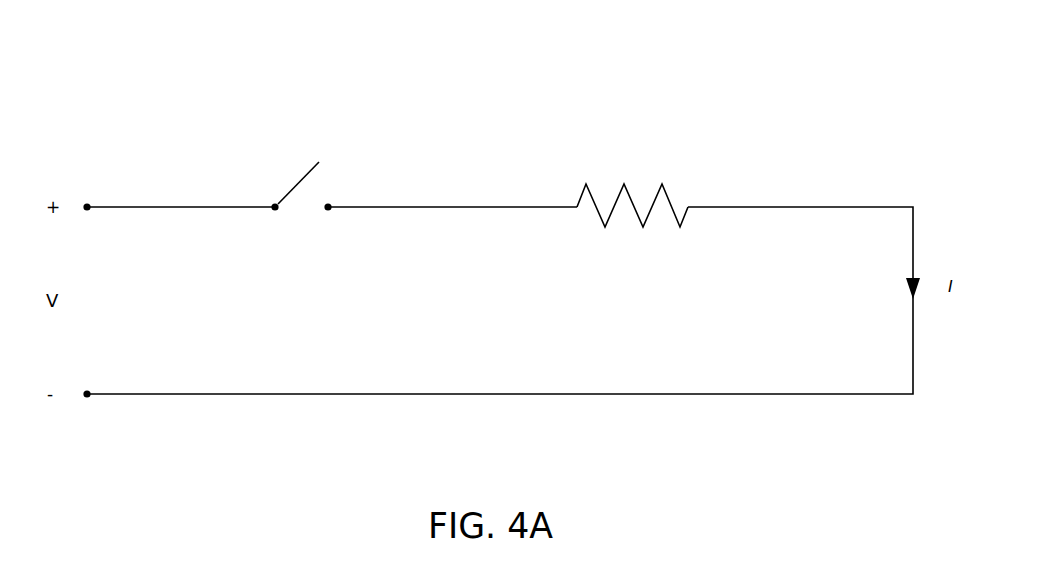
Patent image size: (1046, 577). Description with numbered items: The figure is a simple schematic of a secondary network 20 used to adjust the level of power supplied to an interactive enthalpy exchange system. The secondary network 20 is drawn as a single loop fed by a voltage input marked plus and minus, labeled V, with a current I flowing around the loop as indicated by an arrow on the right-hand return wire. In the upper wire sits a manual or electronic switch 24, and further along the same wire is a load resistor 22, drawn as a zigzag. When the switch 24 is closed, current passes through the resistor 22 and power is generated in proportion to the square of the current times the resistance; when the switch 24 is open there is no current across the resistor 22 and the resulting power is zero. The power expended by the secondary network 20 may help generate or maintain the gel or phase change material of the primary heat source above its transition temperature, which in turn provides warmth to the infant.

The secondary network 20 is at (444, 90).
The resistor R1 22 is at (662, 182).
The switch S1 24 is at (301, 179).